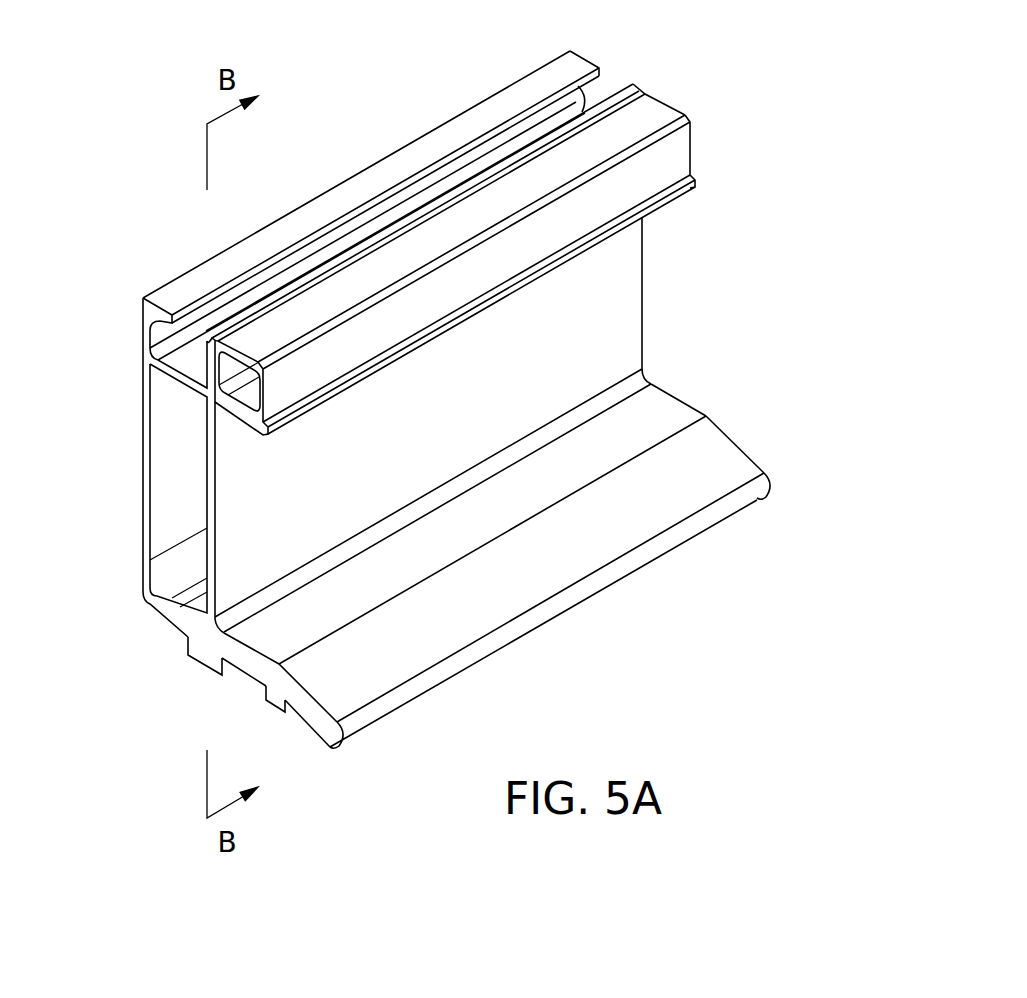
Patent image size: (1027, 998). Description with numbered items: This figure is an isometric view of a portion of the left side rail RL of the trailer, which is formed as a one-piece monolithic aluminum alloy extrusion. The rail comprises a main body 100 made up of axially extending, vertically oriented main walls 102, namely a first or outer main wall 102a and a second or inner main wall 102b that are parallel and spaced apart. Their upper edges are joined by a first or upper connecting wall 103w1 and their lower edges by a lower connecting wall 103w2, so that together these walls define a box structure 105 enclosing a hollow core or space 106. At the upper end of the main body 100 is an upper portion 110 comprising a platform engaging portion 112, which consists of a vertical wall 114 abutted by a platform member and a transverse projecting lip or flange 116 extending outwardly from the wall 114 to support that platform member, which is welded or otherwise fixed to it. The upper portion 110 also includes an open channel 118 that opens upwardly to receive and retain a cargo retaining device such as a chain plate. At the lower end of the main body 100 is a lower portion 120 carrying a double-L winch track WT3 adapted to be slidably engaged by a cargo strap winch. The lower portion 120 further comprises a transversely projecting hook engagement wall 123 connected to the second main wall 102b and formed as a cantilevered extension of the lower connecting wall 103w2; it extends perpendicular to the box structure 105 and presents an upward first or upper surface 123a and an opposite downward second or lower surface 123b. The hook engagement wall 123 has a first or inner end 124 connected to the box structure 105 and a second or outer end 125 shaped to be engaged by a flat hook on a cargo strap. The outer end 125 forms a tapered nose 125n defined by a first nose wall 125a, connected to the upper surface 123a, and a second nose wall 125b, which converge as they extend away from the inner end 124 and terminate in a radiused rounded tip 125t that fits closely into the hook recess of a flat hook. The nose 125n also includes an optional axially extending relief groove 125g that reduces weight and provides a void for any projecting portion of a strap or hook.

The main body 100 is at (621, 309).
The main walls 102 is at (635, 255).
The first or outer main wall 102a is at (148, 397).
The second or inner main wall 102b is at (433, 500).
The first or upper connecting wall 103w1 is at (176, 376).
The lower connecting wall 103w2 is at (172, 607).
The box structure 105 is at (131, 420).
The hollow core or space 106 is at (197, 402).
The upper portion 110 is at (719, 173).
The platform engaging portion 112 is at (672, 156).
The vertical wall 114 is at (533, 246).
The transverse projecting lip or flange 116 is at (690, 192).
The open channel 118 is at (607, 78).
The lower portion 120 is at (125, 570).
The hook engagement wall 123 is at (633, 492).
The first or upper surface 123a is at (675, 402).
The second or lower surface 123b is at (252, 662).
The first or inner end 124 is at (470, 502).
The second or outer end 125 is at (570, 560).
The first nose wall 125a is at (395, 642).
The second nose wall 125b is at (280, 707).
The relief groove 125g is at (310, 716).
The tapered nose 125n is at (521, 615).
The rounded tip 125t is at (740, 500).
The left side rail RL is at (664, 341).
The winch track WT3 is at (161, 629).